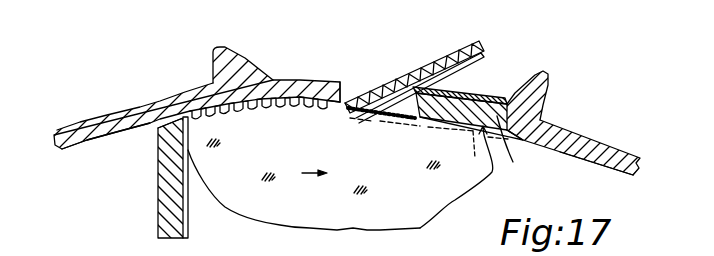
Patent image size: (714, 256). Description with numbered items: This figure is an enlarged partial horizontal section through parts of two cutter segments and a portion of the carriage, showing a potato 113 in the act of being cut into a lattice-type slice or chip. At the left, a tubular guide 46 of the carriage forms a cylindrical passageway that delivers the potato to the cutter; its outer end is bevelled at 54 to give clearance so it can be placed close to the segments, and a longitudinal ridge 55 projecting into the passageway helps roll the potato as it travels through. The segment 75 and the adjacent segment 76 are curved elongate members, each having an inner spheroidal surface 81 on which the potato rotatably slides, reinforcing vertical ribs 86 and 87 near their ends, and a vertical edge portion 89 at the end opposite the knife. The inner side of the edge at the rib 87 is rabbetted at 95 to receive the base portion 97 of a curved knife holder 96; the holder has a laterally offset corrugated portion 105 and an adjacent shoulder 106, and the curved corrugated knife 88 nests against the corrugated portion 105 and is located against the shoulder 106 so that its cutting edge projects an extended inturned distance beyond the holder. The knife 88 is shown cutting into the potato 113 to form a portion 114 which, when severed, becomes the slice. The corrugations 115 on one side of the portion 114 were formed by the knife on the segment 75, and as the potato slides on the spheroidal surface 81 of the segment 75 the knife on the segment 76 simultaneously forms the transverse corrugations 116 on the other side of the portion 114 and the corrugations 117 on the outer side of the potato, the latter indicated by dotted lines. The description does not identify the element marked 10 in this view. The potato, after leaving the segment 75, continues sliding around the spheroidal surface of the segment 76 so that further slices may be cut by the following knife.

The sheet 10 is at (453, 121).
The tubular guide 46 is at (162, 203).
The bevel 54 is at (157, 126).
The ridge 55 is at (188, 228).
The segment 75 is at (102, 116).
The segment 76 is at (600, 138).
The inner spheroidal surface 81 is at (100, 141).
The vertical rib 86 is at (214, 63).
The vertical rib 87 is at (546, 80).
The curved corrugated knife 88 is at (349, 116).
The vertical edge portion 89 is at (342, 84).
The rabbet 95 is at (515, 131).
The knife holder 96 is at (492, 174).
The base portion 97 is at (513, 144).
The corrugated portion 105 is at (384, 119).
The shoulder 106 is at (422, 119).
The potato 113 is at (300, 214).
The portion 114 is at (480, 41).
The curved corrugations 115 is at (281, 112).
The curved corrugations 116 is at (483, 56).
The corrugations 117 is at (474, 154).